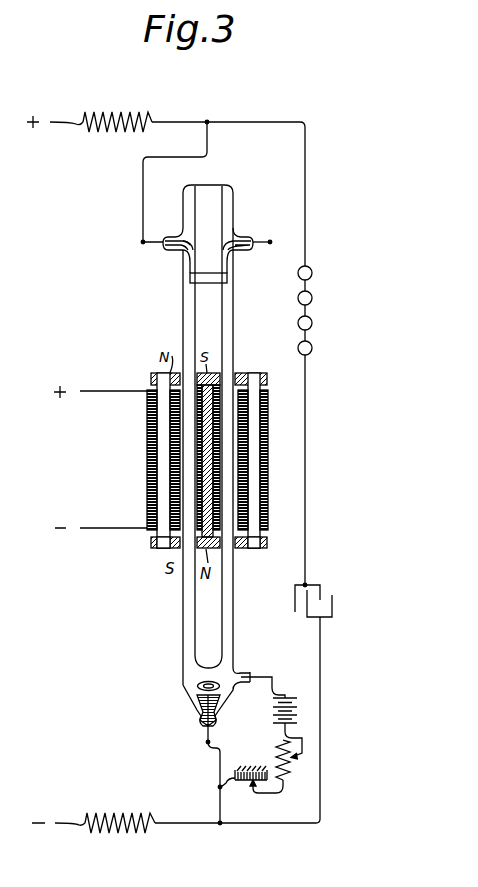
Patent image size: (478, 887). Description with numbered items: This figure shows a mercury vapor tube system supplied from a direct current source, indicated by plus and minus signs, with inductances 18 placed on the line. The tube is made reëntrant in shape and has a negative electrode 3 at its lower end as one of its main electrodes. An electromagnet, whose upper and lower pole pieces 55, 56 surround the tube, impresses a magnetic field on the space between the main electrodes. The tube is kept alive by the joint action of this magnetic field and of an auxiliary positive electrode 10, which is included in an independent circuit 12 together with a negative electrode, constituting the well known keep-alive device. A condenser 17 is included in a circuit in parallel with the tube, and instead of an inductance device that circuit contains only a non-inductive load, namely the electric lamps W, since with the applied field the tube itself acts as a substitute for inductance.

The negative electrode 3 is at (197, 702).
The auxiliary positive electrode 10 is at (197, 685).
The independent circuit 12 is at (272, 755).
The condenser 17 is at (327, 600).
The inductance 18 is at (119, 462).
The upper magnet pole piece 55 is at (155, 373).
The lower magnet pole piece 56 is at (164, 549).
The electric lamps W is at (167, 310).